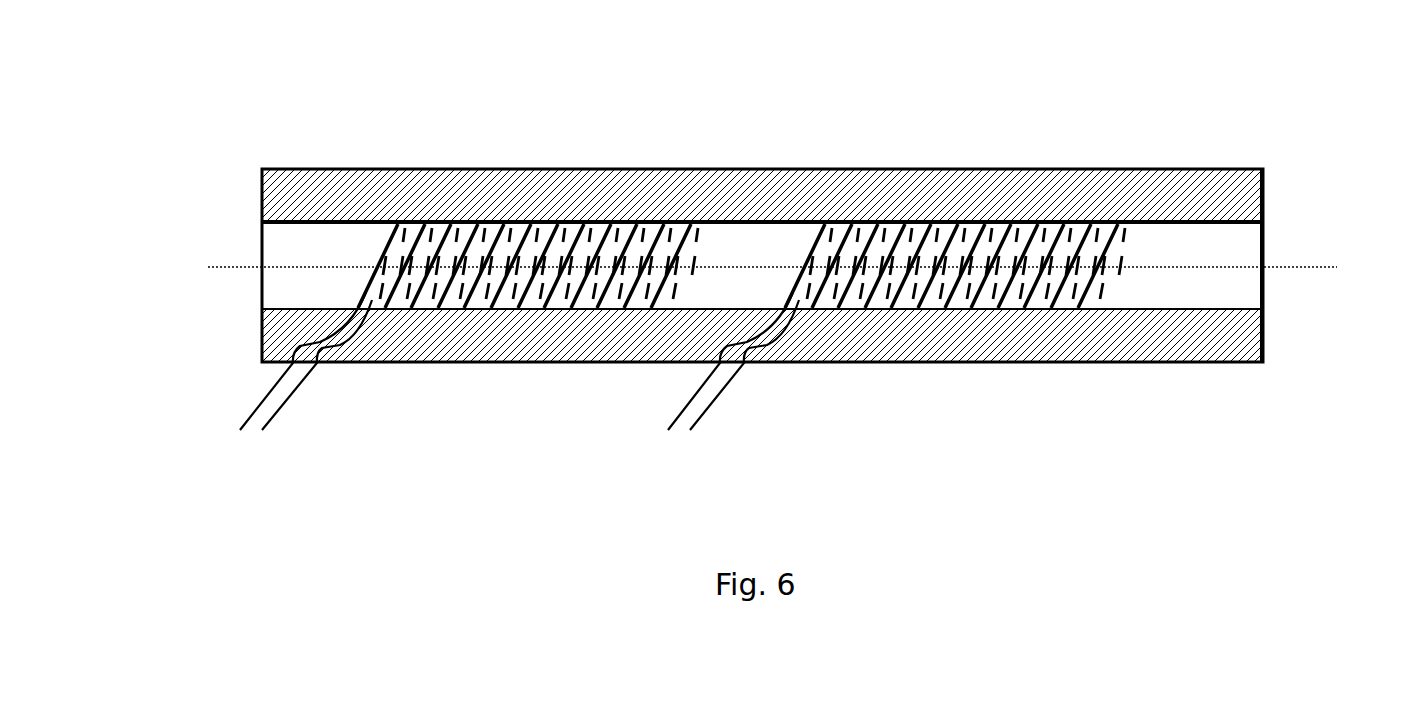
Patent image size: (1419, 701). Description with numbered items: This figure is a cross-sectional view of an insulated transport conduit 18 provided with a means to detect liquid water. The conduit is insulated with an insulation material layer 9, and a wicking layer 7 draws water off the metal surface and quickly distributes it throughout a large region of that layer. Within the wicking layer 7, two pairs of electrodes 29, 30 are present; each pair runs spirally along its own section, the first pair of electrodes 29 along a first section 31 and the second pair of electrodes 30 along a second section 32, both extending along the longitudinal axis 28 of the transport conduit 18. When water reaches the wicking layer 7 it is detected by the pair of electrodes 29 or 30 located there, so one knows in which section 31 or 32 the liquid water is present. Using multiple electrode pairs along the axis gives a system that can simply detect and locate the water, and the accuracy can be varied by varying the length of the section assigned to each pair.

The wicking layer 7 is at (1228, 303).
The insulation material layer 9 is at (1234, 168).
The insulated transport conduit 18 is at (1276, 347).
The longitudinal axis 28 is at (793, 265).
The first pair of electrodes 29 is at (232, 437).
The second pair of electrodes 30 is at (660, 437).
The first section 31 is at (379, 120).
The second section 32 is at (806, 120).